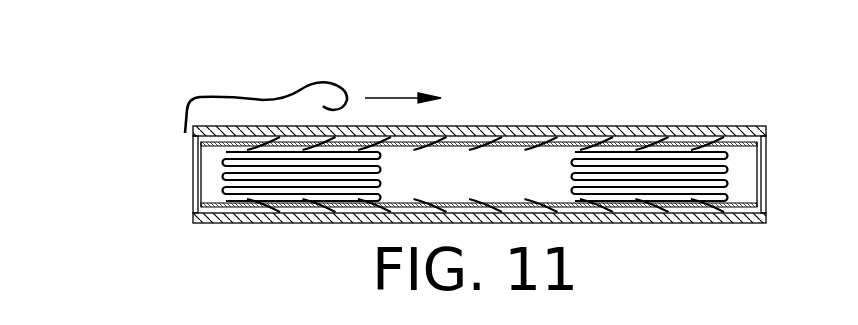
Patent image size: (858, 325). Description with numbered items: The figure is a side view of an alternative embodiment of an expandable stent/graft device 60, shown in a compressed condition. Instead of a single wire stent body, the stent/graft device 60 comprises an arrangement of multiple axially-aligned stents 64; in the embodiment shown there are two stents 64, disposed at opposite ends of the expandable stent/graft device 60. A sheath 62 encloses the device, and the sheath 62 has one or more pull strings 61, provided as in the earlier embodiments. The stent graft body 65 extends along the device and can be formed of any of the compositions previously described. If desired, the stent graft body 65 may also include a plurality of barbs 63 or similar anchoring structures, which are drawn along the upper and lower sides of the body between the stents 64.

The stent/graft device 60 is at (598, 97).
The pull string 61 is at (343, 87).
The sheath 62 is at (645, 127).
The barbs 63 is at (590, 133).
The stents 64 is at (237, 195).
The stent graft body 65 is at (767, 132).